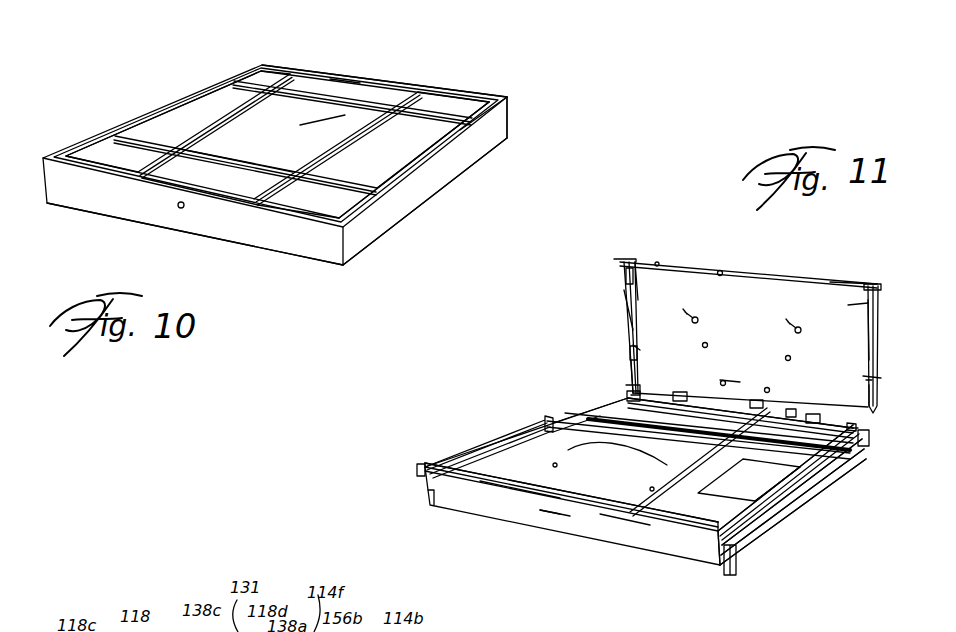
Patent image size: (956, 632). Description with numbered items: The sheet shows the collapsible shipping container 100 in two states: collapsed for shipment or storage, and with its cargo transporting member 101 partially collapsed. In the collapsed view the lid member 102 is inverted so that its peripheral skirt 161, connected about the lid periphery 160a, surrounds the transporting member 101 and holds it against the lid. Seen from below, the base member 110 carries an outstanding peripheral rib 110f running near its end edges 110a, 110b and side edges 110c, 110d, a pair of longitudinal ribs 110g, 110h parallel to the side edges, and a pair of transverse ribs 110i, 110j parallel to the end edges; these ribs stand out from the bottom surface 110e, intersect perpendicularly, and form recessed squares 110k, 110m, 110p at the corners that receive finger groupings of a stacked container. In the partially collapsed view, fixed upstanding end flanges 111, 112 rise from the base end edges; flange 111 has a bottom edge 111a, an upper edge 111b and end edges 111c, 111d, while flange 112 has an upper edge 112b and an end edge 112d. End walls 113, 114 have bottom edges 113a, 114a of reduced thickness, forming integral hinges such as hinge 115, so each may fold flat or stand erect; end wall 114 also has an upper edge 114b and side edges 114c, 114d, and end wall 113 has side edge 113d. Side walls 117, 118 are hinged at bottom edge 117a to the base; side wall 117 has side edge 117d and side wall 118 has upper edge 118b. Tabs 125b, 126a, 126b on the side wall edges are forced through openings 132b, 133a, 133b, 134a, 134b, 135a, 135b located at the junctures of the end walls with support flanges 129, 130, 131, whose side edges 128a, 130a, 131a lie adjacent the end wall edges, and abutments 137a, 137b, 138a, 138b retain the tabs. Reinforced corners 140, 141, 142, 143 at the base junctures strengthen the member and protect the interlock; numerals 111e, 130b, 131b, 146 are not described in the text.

In FIG. 10, the collapsible shipping container 100 is at (404, 82).
In FIG. 10, the cargo transporting member 101 is at (430, 107).
In FIG. 10, the lid member 102 is at (508, 112).
In FIG. 10, the base member 110 is at (344, 114).
In FIG. 11, the base member 110 is at (795, 548).
In FIG. 10, the end edge of base member 110a is at (333, 78).
In FIG. 10, the end edge of base member 110b is at (157, 180).
In FIG. 11, the end edge of base member 110b is at (557, 538).
In FIG. 10, the side edge of base member 110c is at (187, 100).
In FIG. 11, the side edge of base member 110c is at (802, 508).
In FIG. 10, the side edge of base member 110d is at (423, 170).
In FIG. 10, the bottom surface of base member 110e is at (310, 137).
In FIG. 10, the outstanding peripheral rib 110f is at (440, 143).
In FIG. 10, the outstanding longitudinal rib 110g is at (247, 113).
In FIG. 10, the outstanding longitudinal rib 110h is at (323, 146).
In FIG. 10, the outstanding transverse rib 110i is at (190, 160).
In FIG. 10, the outstanding transverse rib 110j is at (343, 75).
In FIG. 10, the recessed square 110k is at (103, 150).
In FIG. 10, the recessed square 110m is at (300, 193).
In FIG. 10, the recessed square 110p is at (250, 80).
In FIG. 10, the lid periphery 160a is at (413, 213).
In FIG. 10, the peripheral skirt 161 is at (487, 143).
In FIG. 11, the fixed upstanding end flange 111 is at (473, 507).
In FIG. 11, the bottom edge of end flange 111a is at (517, 513).
In FIG. 11, the upper edge of end flange 111b is at (543, 512).
In FIG. 11, the end edge of end flange 111c is at (422, 494).
In FIG. 11, the end edge of end flange 111d is at (707, 575).
In FIG. 11, the rail lip 111e is at (843, 462).
In FIG. 11, the fixed upstanding end flange 112 is at (854, 421).
In FIG. 11, the upper edge of end flange 112b is at (626, 396).
In FIG. 11, the end edge of end flange 112d is at (866, 426).
In FIG. 11, the end wall 113 is at (610, 482).
In FIG. 11, the bottom edge of end wall 113a is at (420, 470).
In FIG. 11, the side edge of end wall 113d is at (783, 540).
In FIG. 11, the end wall 114 is at (737, 287).
In FIG. 11, the bottom edge of end wall 114a is at (726, 385).
In FIG. 11, the upper end wall edge 114b is at (720, 270).
In FIG. 11, the side edge of end wall 114c is at (640, 296).
In FIG. 11, the side edge of end wall 114d is at (837, 282).
In FIG. 11, the integral hinge 115 is at (625, 527).
In FIG. 11, the side wall 117 is at (832, 500).
In FIG. 11, the bottom edge of side wall 117a is at (838, 490).
In FIG. 11, the side edge of side wall 117d is at (788, 408).
In FIG. 11, the side wall 118 is at (700, 431).
In FIG. 11, the upper edge of side wall 118b is at (700, 462).
In FIG. 11, the lower tab 125b is at (816, 413).
In FIG. 11, the upper tab 126a is at (755, 401).
In FIG. 11, the lower tab 126b is at (681, 391).
In FIG. 11, the side edge of support flange 128a is at (773, 523).
In FIG. 11, the support flange 129 is at (484, 434).
In FIG. 11, the support flange 130 is at (879, 314).
In FIG. 11, the side edge of support flange 130a is at (879, 334).
In FIG. 11, the post bottom 130b is at (879, 398).
In FIG. 11, the support flange 131 is at (627, 303).
In FIG. 11, the side edge of support flange 131a is at (630, 318).
In FIG. 11, the post bottom 131b is at (632, 364).
In FIG. 11, the lower opening 132b is at (775, 560).
In FIG. 11, the upper opening 133a is at (882, 292).
In FIG. 11, the lower opening 133b is at (882, 378).
In FIG. 11, the upper opening 134a is at (623, 276).
In FIG. 11, the lower opening 134b is at (630, 352).
In FIG. 11, the upper opening 135a is at (491, 428).
In FIG. 11, the lower opening 135b is at (447, 460).
In FIG. 11, the abutment 137a is at (848, 305).
In FIG. 11, the abutment 137b is at (866, 380).
In FIG. 11, the abutment 138a is at (657, 262).
In FIG. 11, the abutment 138b is at (637, 350).
In FIG. 11, the fixed reinforced corner 140 is at (733, 572).
In FIG. 11, the fixed reinforced corner 141 is at (869, 448).
In FIG. 11, the fixed reinforced corner 142 is at (585, 392).
In FIG. 11, the fixed reinforced corner 143 is at (421, 485).
In FIG. 11, the rail 146 is at (565, 412).